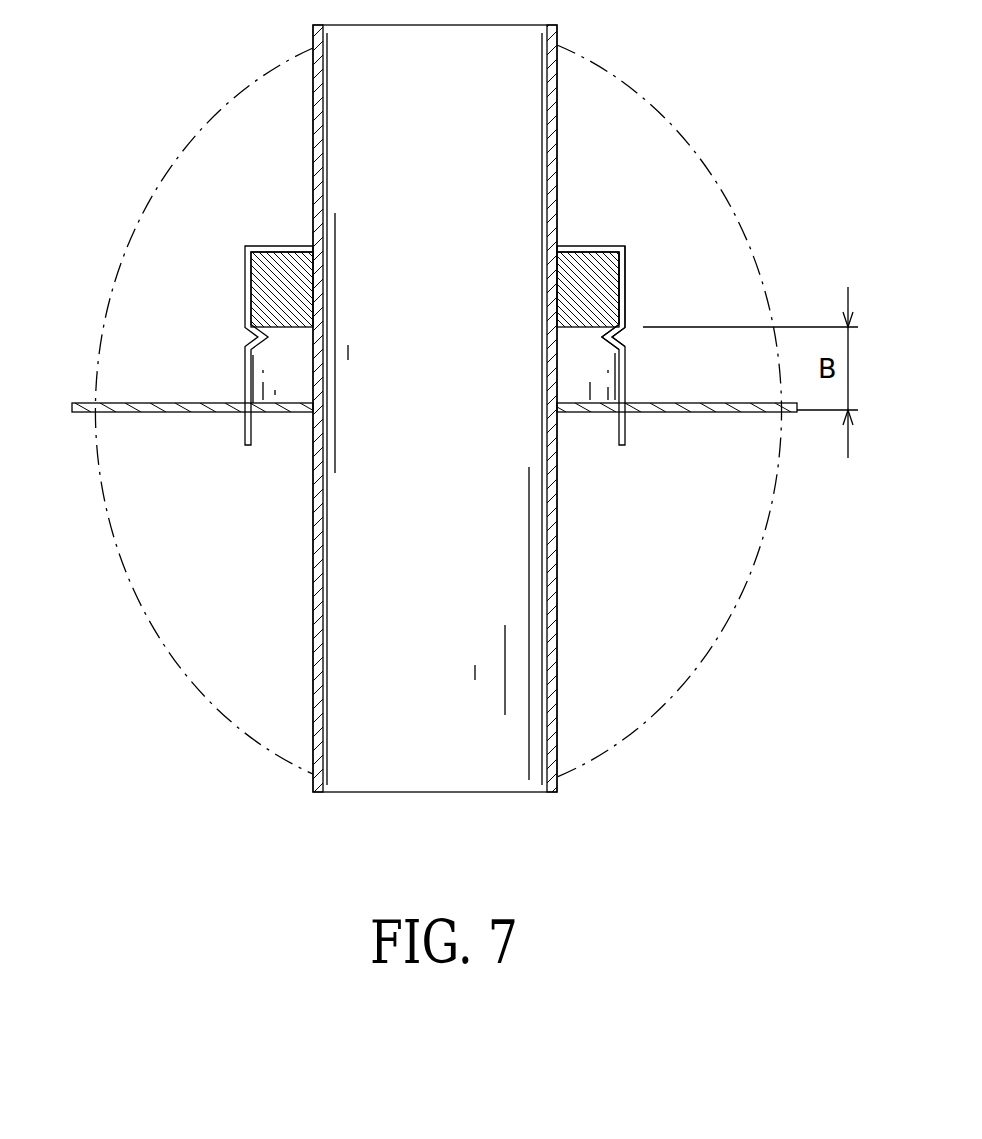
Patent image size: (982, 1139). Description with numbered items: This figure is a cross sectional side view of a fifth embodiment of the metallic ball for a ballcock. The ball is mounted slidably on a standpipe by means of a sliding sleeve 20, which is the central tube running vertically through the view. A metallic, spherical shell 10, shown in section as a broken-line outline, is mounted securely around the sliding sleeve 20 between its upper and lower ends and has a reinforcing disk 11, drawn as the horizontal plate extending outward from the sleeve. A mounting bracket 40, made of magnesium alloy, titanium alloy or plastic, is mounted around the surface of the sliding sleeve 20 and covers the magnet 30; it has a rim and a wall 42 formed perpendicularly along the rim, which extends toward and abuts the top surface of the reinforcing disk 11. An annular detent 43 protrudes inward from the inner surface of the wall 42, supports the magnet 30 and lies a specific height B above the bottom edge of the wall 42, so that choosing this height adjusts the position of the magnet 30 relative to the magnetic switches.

The shell 10 is at (690, 138).
The reinforcing disk 11 is at (707, 410).
The sliding sleeve 20 is at (557, 100).
The magnet 30 is at (276, 278).
The mounting bracket 40 is at (578, 248).
The wall 42 is at (625, 292).
The annular detent 43 is at (623, 340).